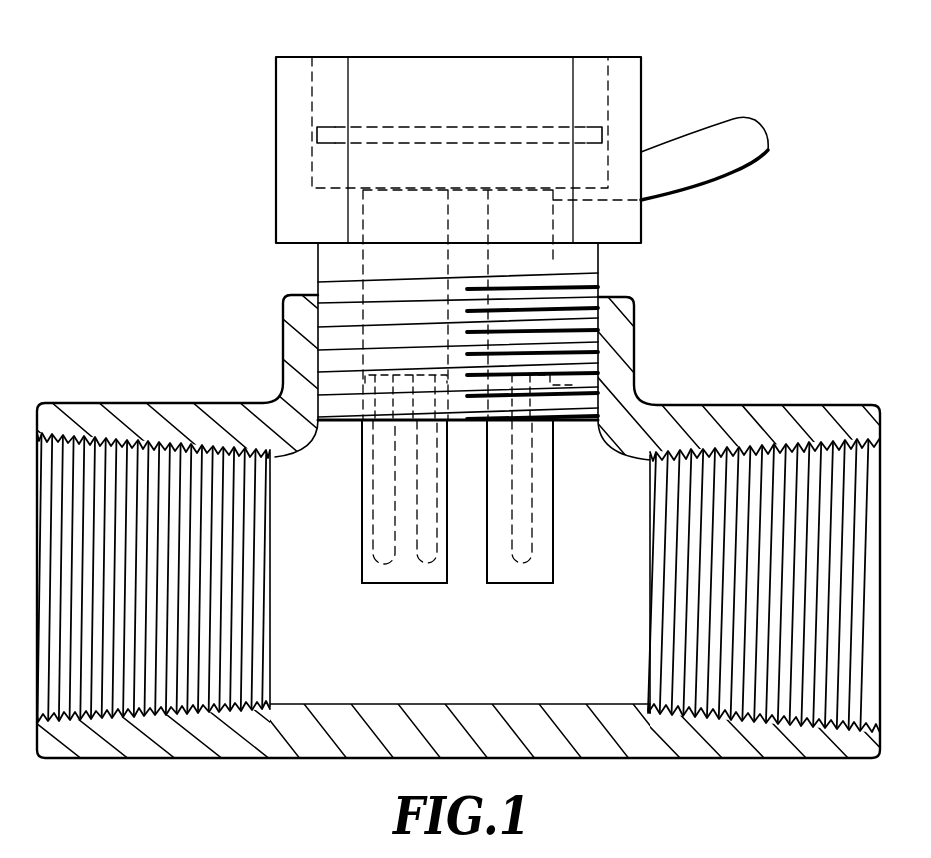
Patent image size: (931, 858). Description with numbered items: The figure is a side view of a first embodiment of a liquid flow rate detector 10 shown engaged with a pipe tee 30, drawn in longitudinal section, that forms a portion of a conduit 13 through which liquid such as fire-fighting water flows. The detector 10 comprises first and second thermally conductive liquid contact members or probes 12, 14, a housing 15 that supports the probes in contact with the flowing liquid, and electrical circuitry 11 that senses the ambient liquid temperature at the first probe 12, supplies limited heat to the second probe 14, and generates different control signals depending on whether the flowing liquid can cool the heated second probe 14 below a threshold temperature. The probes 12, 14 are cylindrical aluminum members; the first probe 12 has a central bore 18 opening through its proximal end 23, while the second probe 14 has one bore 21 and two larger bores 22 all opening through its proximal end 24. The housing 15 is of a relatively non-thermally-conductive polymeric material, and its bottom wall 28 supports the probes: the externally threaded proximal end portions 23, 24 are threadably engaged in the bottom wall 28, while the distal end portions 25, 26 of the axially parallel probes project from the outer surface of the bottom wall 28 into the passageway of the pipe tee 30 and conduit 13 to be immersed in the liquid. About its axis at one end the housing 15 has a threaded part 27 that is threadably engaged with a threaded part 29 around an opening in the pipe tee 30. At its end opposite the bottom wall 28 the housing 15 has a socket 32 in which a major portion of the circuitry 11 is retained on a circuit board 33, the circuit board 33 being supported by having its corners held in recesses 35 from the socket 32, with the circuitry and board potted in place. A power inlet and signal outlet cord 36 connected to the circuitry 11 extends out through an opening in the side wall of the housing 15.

The liquid flow rate detector 10 is at (207, 223).
The electrical circuitry 11 is at (353, 127).
The first probe 12 is at (553, 540).
The conduit 13 is at (765, 403).
The second probe 14 is at (362, 530).
The housing 15 is at (641, 231).
The central bore 18 is at (531, 516).
The bore 21 is at (373, 548).
The bores 22 is at (440, 560).
The proximal end 23 is at (612, 385).
The proximal end 24 is at (365, 405).
The distal end portion 25 is at (555, 583).
The distal end portion 26 is at (385, 587).
The threaded part 27 is at (318, 346).
The bottom wall 28 is at (578, 425).
The threaded part 29 is at (285, 300).
The pipe tee 30 is at (130, 402).
The socket 32 is at (312, 90).
The circuit board 33 is at (500, 127).
The recesses 35 is at (608, 132).
The power inlet and signal outlet cord 36 is at (724, 173).